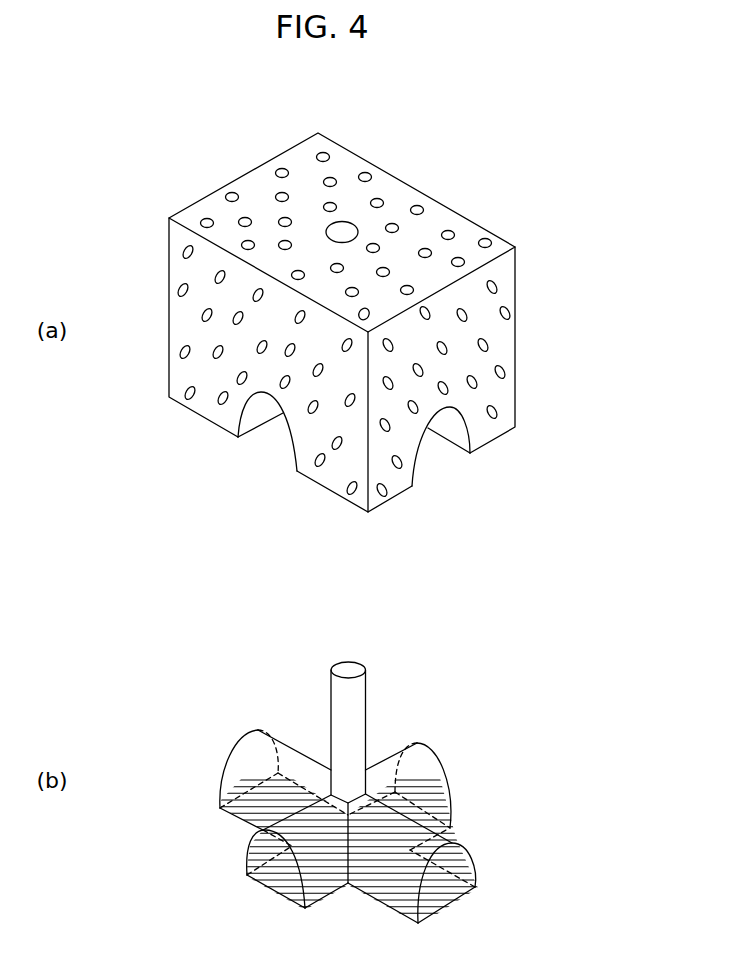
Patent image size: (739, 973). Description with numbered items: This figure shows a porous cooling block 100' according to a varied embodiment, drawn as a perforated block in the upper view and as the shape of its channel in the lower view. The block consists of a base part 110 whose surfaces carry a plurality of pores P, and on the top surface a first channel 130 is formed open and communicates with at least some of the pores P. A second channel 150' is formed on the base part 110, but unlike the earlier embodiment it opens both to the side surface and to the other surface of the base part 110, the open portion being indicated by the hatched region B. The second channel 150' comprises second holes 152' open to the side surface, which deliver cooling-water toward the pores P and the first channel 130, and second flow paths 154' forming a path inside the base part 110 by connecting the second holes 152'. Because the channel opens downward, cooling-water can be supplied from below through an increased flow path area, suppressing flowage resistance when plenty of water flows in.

The porous cooling block 100' is at (345, 316).
The base part 110 is at (388, 322).
The first channel 130 is at (347, 216).
The pore P is at (423, 209).
The second channel 150' is at (350, 657).
The second hole 152' is at (453, 756).
The second flow path 154' is at (398, 738).
The hatched region B is at (350, 846).